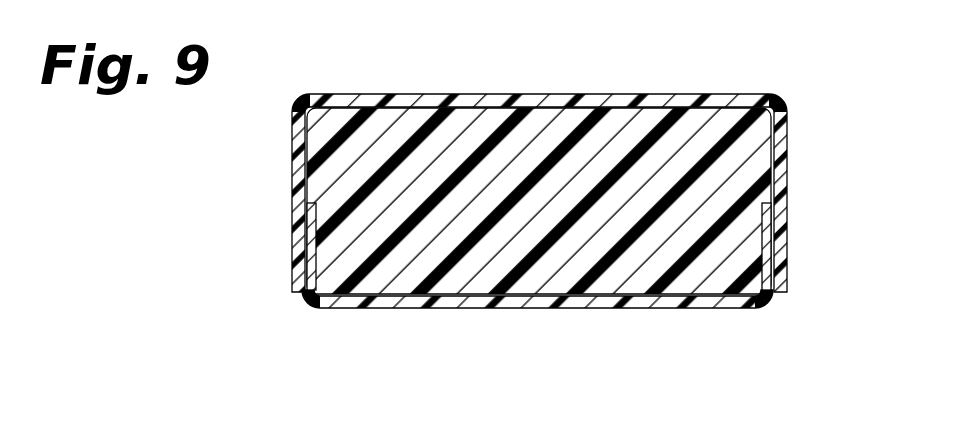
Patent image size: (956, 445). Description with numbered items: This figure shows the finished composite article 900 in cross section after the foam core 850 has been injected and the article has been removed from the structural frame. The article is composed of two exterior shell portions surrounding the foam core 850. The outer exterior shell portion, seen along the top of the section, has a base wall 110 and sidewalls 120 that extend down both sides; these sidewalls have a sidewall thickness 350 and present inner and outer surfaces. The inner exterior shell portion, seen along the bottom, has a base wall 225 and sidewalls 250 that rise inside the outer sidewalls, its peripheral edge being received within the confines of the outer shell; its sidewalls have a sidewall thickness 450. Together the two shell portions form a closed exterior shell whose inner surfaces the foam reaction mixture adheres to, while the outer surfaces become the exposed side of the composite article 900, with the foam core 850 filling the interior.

The base wall 110 is at (675, 100).
The sidewall 120 is at (293, 126).
The base wall 225 is at (537, 327).
The sidewall 250 is at (310, 276).
The sidewall thickness 350 is at (539, 168).
The sidewall thickness 450 is at (697, 308).
The foam core 850 is at (455, 281).
The composite article 900 is at (539, 208).